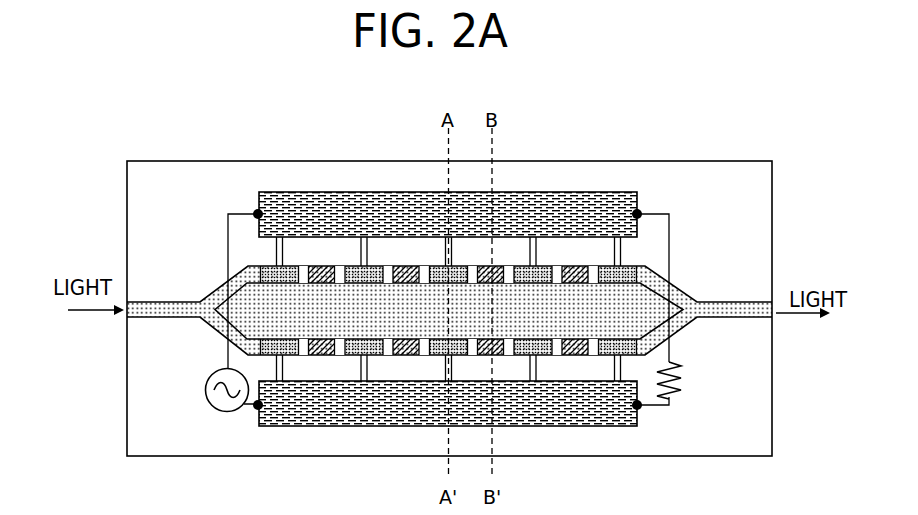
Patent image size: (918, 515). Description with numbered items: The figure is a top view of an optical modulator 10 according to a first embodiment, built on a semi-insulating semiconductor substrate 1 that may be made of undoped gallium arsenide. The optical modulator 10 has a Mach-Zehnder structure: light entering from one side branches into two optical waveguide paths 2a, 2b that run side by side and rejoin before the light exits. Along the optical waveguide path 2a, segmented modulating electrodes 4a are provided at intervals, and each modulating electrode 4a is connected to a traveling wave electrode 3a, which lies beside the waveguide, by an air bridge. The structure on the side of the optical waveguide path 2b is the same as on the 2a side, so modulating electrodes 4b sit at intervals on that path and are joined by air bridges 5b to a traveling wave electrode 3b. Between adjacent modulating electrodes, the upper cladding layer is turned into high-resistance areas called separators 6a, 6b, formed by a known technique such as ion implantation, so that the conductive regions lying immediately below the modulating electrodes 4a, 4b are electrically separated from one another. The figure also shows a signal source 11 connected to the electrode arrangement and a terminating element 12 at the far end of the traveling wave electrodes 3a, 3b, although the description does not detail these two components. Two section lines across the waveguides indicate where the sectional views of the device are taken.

The semi-insulating semiconductor substrate 1 is at (697, 438).
The optical modulator 10 is at (246, 146).
The optical waveguide path 2a is at (402, 204).
The optical waveguide path 2b is at (402, 416).
The traveling wave electrode 3a is at (580, 200).
The traveling wave electrode 3b is at (580, 420).
The modulating electrode 4a is at (440, 265).
The modulating electrode 4b is at (438, 356).
The air bridge 5b is at (447, 265).
The separator 6a is at (497, 265).
The separator 6b is at (497, 356).
The signal source 11 is at (208, 404).
The terminating resistor 12 is at (680, 385).